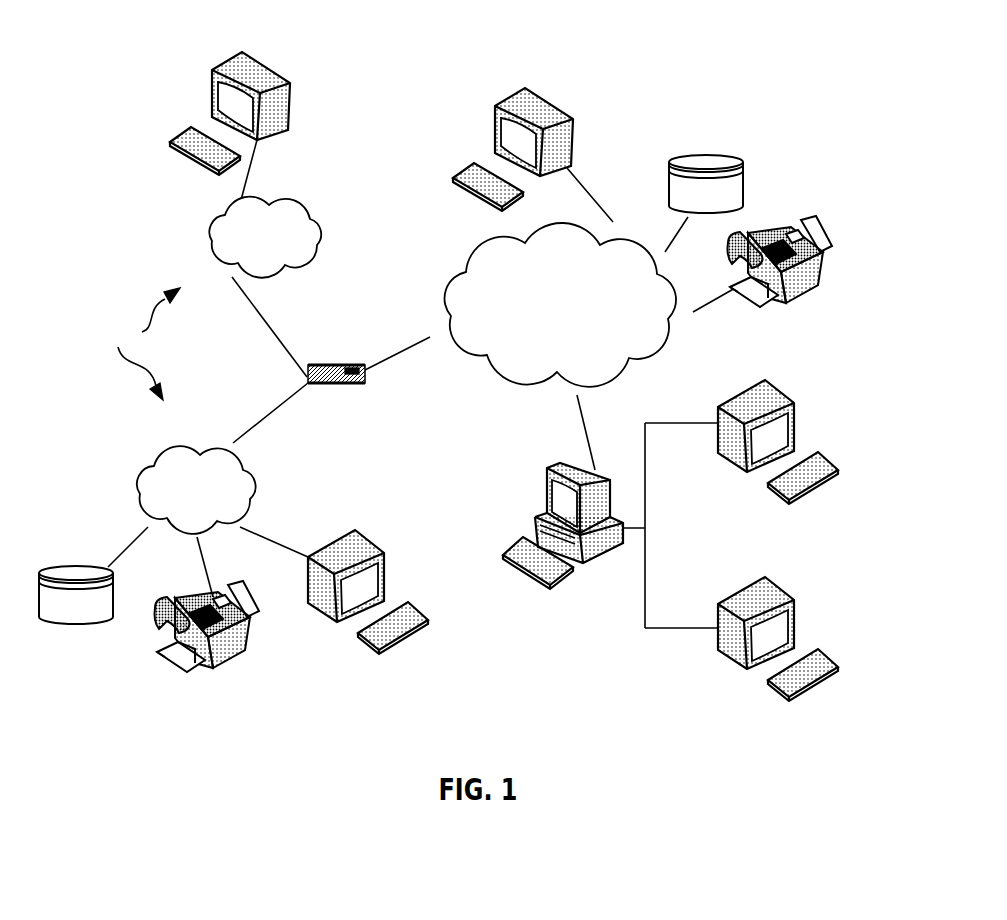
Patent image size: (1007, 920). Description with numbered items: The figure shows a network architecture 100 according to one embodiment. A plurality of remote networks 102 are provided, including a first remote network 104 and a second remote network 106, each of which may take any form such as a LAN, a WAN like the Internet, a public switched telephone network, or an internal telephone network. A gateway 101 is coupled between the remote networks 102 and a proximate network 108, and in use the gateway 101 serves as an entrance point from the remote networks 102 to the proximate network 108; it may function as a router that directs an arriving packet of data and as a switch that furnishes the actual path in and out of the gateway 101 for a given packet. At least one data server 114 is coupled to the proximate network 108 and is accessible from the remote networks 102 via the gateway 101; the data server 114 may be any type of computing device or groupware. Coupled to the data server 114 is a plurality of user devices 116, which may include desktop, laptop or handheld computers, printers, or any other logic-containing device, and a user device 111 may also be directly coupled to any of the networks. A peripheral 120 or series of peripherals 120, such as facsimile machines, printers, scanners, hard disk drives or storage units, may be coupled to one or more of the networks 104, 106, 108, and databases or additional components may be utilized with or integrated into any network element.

The network architecture 100 is at (158, 38).
The gateway 101 is at (323, 365).
The remote networks 102 is at (141, 344).
The first remote network 104 is at (130, 463).
The second remote network 106 is at (328, 210).
The proximate network 108 is at (655, 367).
The user device 111 is at (573, 118).
The data server 114 is at (547, 483).
The user devices 116 is at (292, 88).
The peripheral 120 is at (78, 627).